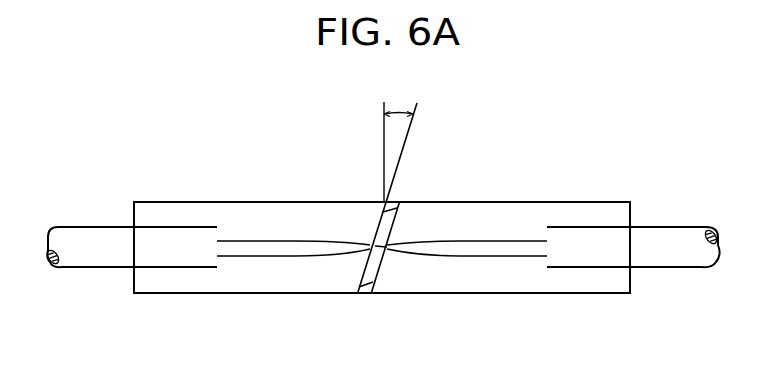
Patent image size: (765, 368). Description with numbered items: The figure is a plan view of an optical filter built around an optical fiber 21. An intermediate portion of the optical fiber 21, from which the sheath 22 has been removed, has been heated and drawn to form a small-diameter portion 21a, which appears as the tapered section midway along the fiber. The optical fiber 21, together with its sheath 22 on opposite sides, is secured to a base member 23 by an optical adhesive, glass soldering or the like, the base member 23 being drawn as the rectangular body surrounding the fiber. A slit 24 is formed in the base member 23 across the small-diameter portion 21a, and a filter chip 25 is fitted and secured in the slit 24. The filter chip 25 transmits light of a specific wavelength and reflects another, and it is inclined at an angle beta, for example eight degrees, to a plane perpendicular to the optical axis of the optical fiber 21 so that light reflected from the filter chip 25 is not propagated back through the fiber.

The optical fiber 21 is at (505, 247).
The small-diameter portion 21a is at (408, 243).
The sheath 22 is at (98, 237).
The base member 23 is at (448, 277).
The slit 24 is at (377, 277).
The filter chip 25 is at (377, 232).